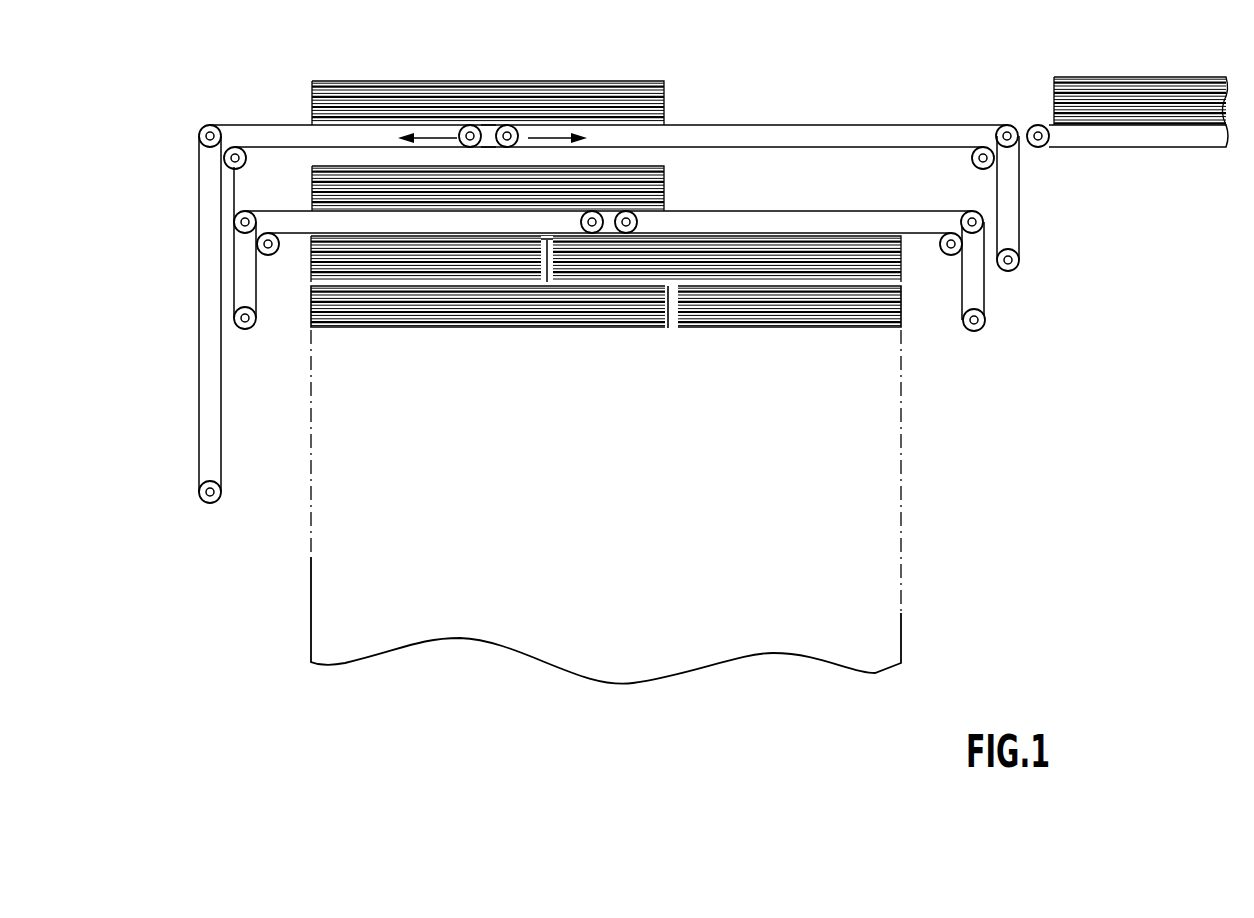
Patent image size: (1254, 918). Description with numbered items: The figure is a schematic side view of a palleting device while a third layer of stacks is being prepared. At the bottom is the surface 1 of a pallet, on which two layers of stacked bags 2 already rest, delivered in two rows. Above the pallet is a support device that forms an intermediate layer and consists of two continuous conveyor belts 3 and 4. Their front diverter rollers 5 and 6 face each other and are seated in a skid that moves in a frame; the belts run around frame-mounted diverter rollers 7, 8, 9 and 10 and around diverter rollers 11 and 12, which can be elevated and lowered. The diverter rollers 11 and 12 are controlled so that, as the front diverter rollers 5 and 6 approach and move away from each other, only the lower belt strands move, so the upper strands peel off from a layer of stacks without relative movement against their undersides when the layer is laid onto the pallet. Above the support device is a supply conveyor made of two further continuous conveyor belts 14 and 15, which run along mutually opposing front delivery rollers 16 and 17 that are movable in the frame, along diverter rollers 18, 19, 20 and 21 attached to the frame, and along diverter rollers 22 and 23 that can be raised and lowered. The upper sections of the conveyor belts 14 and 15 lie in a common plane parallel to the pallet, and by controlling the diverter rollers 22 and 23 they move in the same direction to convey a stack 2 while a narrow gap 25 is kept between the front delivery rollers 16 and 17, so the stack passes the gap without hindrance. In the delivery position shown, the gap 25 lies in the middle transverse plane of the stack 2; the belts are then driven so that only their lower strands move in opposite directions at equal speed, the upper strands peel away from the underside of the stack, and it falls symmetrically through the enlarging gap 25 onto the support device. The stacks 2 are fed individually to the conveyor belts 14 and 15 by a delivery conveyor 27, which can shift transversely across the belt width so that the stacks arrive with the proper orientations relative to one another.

The surface 1 is at (672, 306).
The stacked bags 2 is at (366, 81).
The conveyor belt 3 is at (830, 211).
The conveyor belt 4 is at (290, 211).
The front diverter roller 5 is at (629, 233).
The front diverter roller 6 is at (598, 233).
The frame-mounted diverter roller 7 is at (949, 255).
The frame-mounted diverter roller 8 is at (980, 230).
The frame-mounted diverter roller 9 is at (272, 255).
The frame-mounted diverter roller 10 is at (234, 258).
The elevated and lowered diverter roller 11 is at (973, 331).
The elevated and lowered diverter roller 12 is at (247, 330).
The conveyor belt 14 is at (905, 125).
The conveyor belt 15 is at (283, 124).
The front delivery roller 16 is at (466, 126).
The front delivery roller 17 is at (512, 126).
The diverter roller 18 is at (1011, 124).
The diverter roller 19 is at (980, 146).
The diverter roller 20 is at (203, 122).
The diverter roller 21 is at (240, 147).
The diverter roller 22 is at (1019, 262).
The diverter roller 23 is at (221, 495).
The gap 25 is at (487, 125).
The delivery conveyor 27 is at (1174, 138).